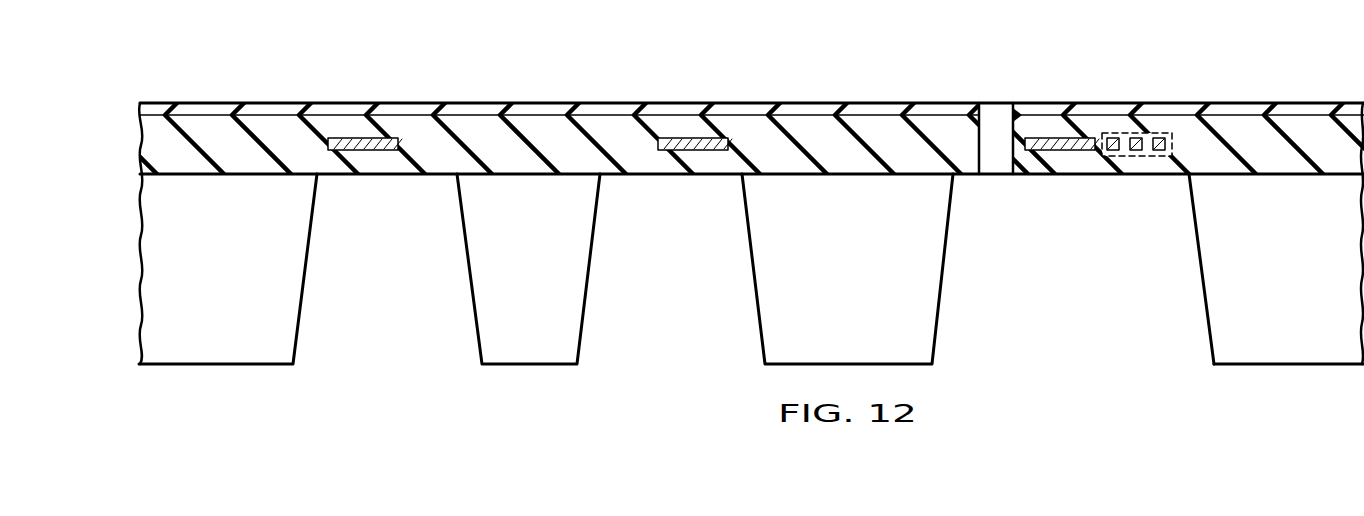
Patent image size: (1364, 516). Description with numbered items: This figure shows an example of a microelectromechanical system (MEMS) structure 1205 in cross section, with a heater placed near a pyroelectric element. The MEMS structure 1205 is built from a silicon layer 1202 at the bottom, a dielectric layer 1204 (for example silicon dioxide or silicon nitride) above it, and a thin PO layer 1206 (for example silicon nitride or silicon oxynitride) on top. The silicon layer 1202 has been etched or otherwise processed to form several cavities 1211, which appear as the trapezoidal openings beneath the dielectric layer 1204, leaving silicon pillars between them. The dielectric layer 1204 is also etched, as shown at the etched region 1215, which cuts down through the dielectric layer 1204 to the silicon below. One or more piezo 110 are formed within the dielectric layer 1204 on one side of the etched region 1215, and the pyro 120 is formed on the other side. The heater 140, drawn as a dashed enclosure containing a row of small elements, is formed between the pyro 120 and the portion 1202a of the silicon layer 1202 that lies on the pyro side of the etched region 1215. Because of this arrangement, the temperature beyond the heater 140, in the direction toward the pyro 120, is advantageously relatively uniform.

The piezo 110 is at (350, 138).
The pyro 120 is at (1046, 138).
The heater 140 is at (1160, 124).
The silicon layer 1202 is at (123, 176).
The portion of the silicon layer 1202a is at (1297, 358).
The dielectric layer 1204 is at (141, 150).
The MEMS structure 1205 is at (851, 74).
The PO layer 1206 is at (141, 108).
The cavities 1211 is at (386, 360).
The etched region 1215 is at (993, 156).